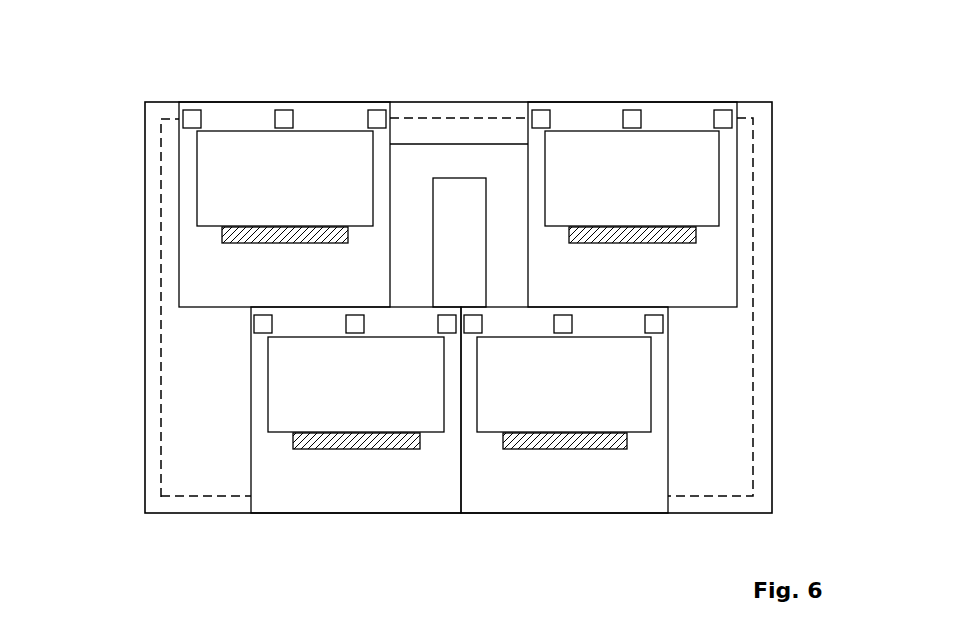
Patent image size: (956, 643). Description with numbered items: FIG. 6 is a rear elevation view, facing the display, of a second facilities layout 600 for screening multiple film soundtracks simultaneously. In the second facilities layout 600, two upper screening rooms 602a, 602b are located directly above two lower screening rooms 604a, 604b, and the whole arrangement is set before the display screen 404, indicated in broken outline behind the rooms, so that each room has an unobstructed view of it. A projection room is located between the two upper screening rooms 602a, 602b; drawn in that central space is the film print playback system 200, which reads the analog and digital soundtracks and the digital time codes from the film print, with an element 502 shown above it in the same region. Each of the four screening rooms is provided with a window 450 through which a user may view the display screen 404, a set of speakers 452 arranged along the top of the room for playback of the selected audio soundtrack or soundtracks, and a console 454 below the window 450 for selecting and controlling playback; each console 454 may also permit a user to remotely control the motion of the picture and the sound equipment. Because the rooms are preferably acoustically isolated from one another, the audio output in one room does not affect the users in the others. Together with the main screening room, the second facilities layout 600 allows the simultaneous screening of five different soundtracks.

The second facilities layout 600 is at (765, 95).
The display screen 404 is at (754, 462).
The upper screening room 602a is at (198, 157).
The upper screening room 602b is at (737, 153).
The lower screening room 604a is at (307, 515).
The lower screening room 604b is at (632, 515).
The connector region 502 is at (490, 144).
The film print playback system 200 is at (462, 178).
The speakers 452 is at (370, 108).
The window 450 is at (308, 217).
The console 454 is at (222, 240).